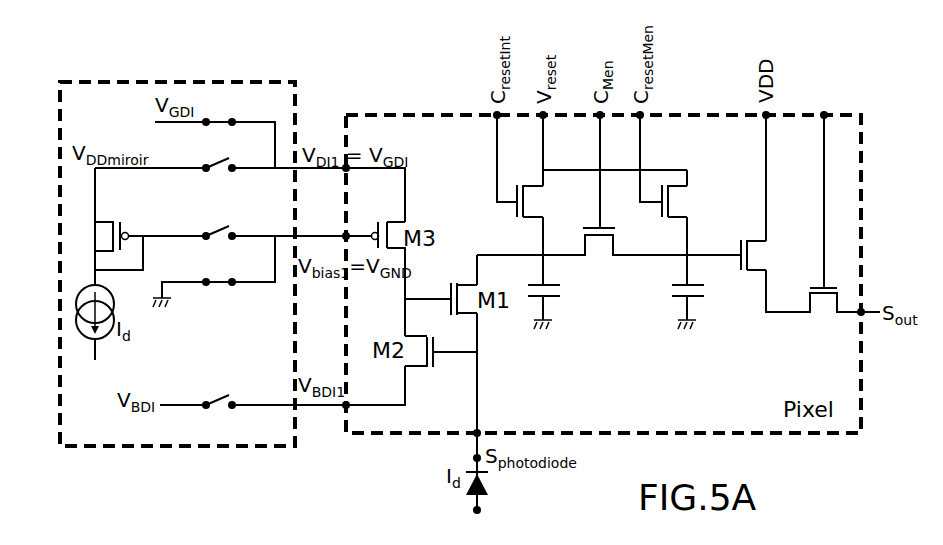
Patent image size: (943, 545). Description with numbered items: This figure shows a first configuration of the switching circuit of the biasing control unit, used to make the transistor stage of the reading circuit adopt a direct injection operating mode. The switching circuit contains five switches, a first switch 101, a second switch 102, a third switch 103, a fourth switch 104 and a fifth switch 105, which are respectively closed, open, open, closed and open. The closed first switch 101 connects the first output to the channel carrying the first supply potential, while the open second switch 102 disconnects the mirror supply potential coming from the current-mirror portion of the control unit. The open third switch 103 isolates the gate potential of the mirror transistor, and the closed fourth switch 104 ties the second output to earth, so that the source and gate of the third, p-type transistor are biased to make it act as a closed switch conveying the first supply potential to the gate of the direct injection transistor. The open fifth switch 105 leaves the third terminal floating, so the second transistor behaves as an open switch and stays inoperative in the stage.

The first switch 101 is at (214, 118).
The second switch 102 is at (236, 158).
The third switch 103 is at (208, 224).
The fourth switch 104 is at (218, 292).
The fifth switch 105 is at (214, 414).